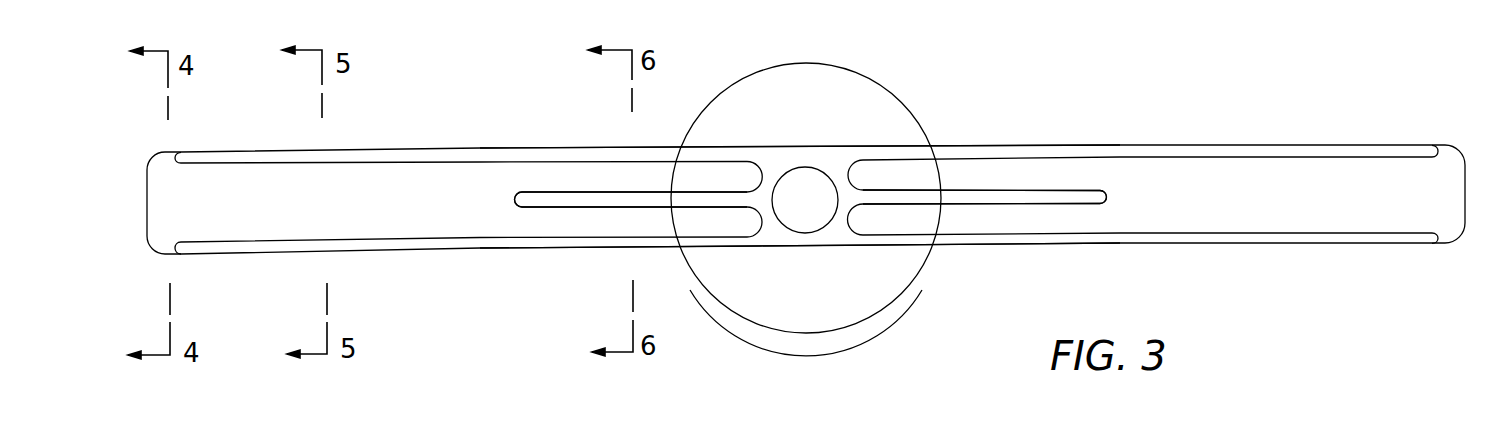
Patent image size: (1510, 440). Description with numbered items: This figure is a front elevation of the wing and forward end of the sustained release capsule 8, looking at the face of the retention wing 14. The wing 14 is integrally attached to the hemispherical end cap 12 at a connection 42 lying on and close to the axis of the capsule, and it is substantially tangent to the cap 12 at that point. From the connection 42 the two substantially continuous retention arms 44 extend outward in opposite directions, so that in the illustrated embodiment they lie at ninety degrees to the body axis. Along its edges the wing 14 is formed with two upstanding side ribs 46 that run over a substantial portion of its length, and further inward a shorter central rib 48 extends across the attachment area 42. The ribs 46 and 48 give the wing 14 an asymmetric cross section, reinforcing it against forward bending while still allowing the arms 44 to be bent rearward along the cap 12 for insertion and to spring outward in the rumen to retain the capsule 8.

The sustained release capsule 8 is at (830, 63).
The hemispherical end cap 12 is at (810, 313).
The wing 14 is at (1063, 141).
The connection 42 is at (830, 173).
The retention arms 44 is at (365, 217).
The side ribs 46 is at (1233, 150).
The central rib 48 is at (1055, 197).